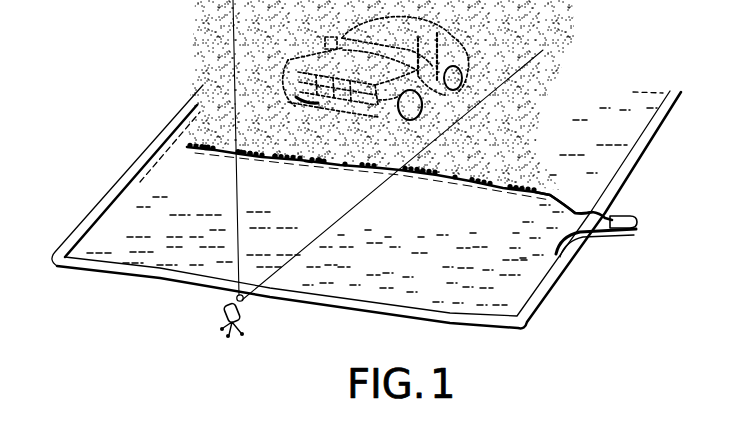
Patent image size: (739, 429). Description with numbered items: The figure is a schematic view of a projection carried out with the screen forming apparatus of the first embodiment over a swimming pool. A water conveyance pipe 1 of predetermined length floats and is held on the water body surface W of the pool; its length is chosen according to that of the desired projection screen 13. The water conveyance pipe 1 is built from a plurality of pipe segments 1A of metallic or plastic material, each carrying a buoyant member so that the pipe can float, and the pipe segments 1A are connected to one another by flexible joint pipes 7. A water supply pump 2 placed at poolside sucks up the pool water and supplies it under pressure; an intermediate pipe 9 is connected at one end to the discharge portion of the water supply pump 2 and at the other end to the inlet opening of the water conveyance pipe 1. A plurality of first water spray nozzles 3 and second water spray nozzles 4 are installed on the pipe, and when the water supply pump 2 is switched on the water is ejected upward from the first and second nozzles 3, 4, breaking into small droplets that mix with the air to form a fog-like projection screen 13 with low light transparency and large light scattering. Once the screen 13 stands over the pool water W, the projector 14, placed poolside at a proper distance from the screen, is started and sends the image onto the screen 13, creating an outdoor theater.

The water conveyance pipe 1 is at (186, 146).
The pipe segment 1A is at (207, 152).
The first water spray nozzle 3 is at (205, 155).
The second water spray nozzle 4 is at (213, 152).
The flexible joint pipe 7 is at (241, 156).
The intermediate pipe 9 is at (587, 199).
The water supply pump 2 is at (620, 214).
The projection screen 13 is at (548, 49).
The projector 14 is at (223, 310).
The water body surface W is at (502, 275).